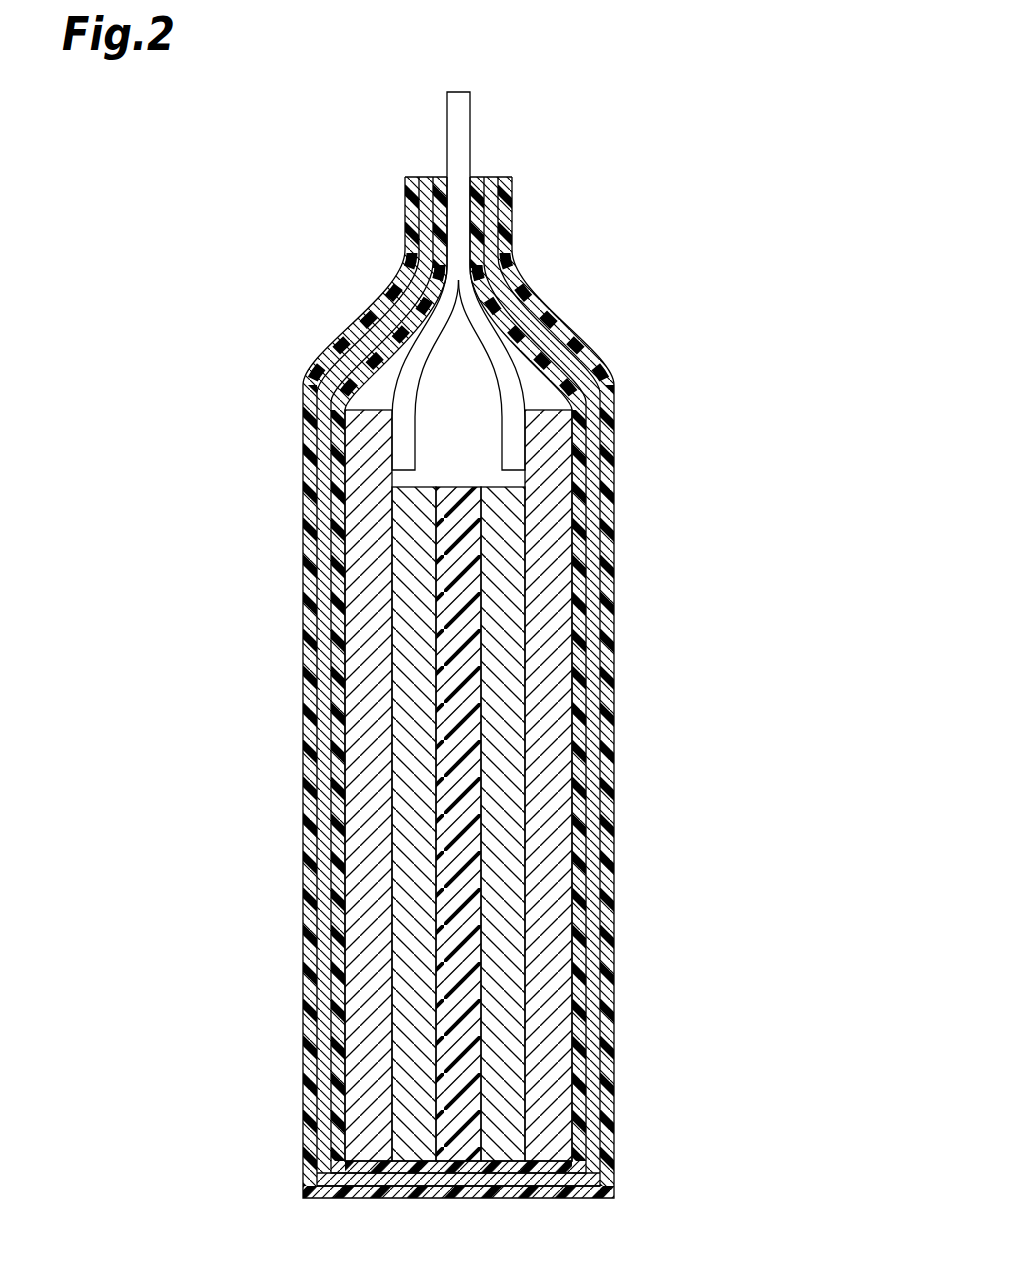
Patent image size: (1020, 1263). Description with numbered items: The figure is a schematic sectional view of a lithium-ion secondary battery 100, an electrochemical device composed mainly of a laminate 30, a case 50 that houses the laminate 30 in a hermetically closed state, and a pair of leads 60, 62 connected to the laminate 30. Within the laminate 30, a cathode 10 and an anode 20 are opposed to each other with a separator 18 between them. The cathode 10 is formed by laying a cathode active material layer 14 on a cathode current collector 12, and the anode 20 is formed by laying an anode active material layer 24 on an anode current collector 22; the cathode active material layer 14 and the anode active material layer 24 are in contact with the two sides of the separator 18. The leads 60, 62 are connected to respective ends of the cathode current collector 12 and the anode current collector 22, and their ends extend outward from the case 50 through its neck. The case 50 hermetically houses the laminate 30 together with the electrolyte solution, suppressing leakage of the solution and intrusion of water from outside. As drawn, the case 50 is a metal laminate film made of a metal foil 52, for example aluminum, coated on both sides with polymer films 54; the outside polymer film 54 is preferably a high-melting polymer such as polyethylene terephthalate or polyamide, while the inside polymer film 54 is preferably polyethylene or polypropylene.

The lithium-ion secondary battery 100 is at (688, 120).
The cathode 10 is at (230, 593).
The cathode current collector 12 is at (530, 603).
The cathode active material layer 14 is at (501, 645).
The separator 18 is at (456, 684).
The anode 20 is at (230, 695).
The anode current collector 22 is at (366, 750).
The anode active material layer 24 is at (401, 720).
The laminate 30 is at (180, 612).
The case 50 is at (526, 687).
The metal foil 52 is at (592, 840).
The polymer film 54 is at (580, 808).
The lead 60 is at (431, 333).
The lead 62 is at (486, 333).